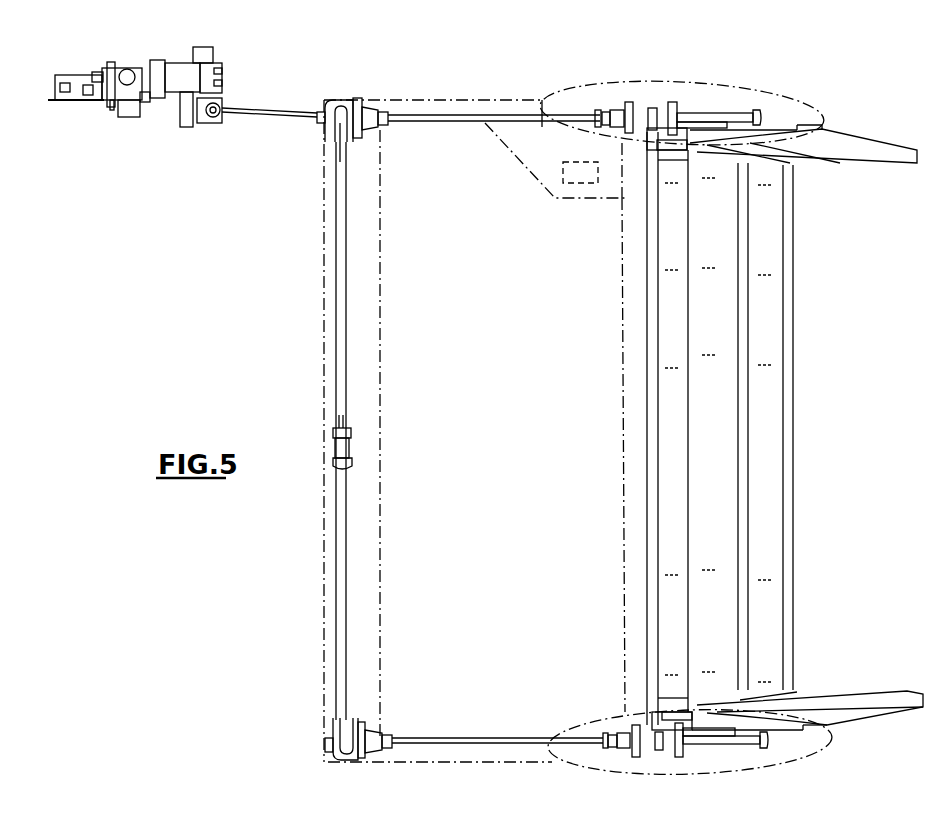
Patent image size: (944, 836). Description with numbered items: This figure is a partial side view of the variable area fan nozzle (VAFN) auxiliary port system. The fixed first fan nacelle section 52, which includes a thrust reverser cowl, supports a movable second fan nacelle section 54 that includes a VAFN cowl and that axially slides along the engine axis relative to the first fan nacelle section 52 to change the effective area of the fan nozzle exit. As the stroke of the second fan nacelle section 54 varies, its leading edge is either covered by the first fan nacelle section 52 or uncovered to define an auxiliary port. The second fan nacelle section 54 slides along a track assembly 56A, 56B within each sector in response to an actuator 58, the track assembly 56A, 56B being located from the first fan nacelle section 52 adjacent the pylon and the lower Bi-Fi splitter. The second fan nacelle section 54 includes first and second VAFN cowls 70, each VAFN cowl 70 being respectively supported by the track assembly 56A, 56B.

The first fan nacelle section 52 is at (503, 87).
The second fan nacelle section 54 is at (858, 118).
The track assembly 56A is at (712, 84).
The track assembly 56B is at (716, 768).
The actuator 58 is at (178, 66).
The VAFN cowl 70 is at (770, 335).